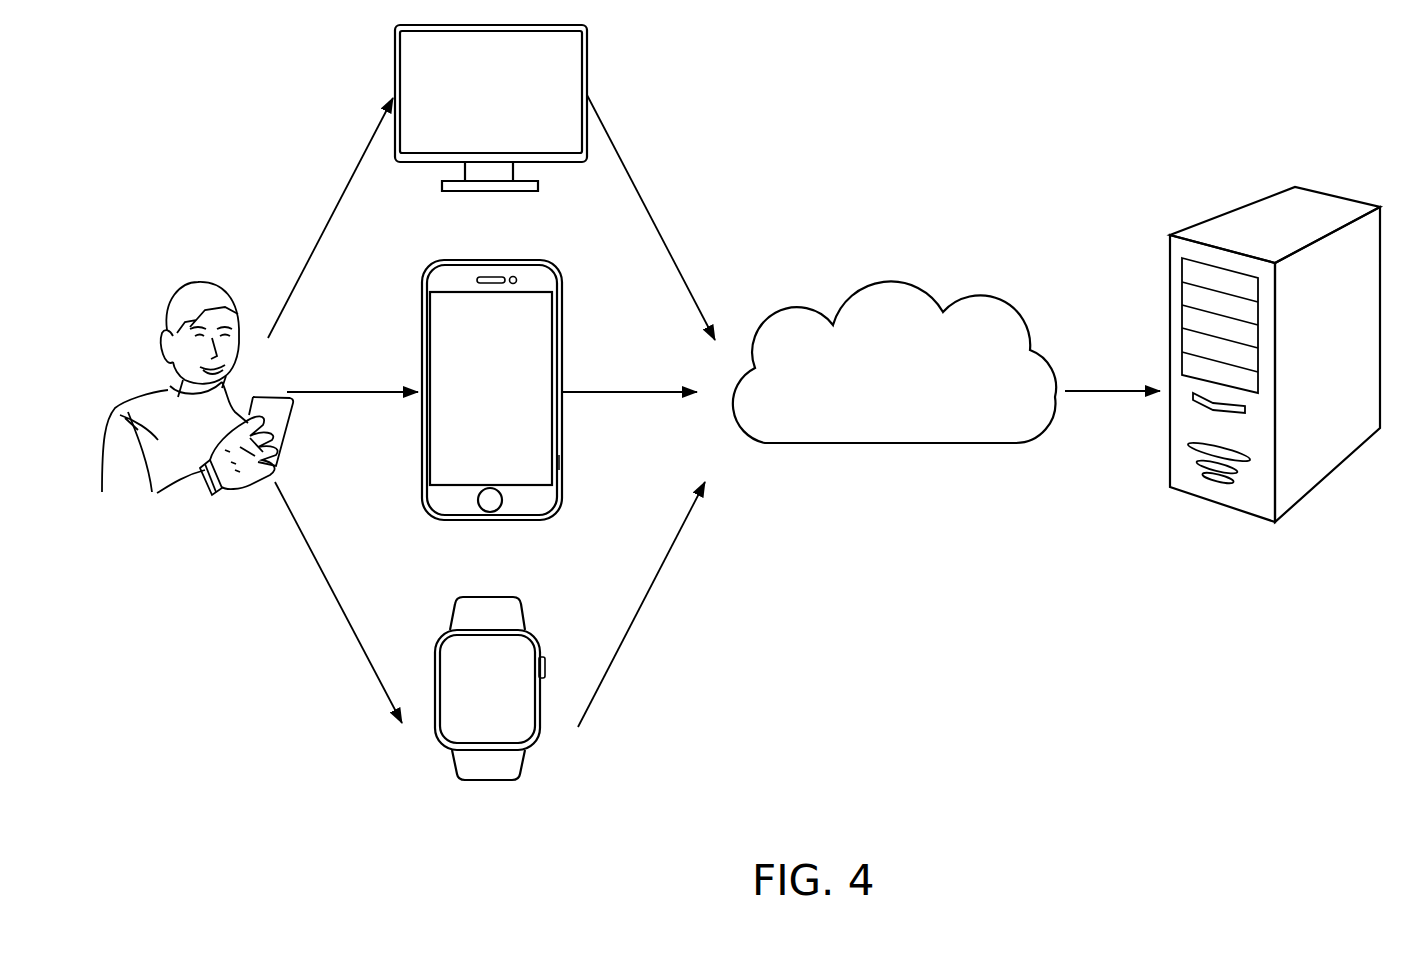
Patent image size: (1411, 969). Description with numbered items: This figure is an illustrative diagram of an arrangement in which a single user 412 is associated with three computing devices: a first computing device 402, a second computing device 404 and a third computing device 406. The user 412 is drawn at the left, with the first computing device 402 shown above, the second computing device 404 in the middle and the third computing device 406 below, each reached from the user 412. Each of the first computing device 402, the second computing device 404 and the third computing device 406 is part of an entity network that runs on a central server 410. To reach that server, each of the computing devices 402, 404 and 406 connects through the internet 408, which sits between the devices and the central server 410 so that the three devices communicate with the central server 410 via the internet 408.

The first computing device 402 is at (397, 66).
The second computing device 404 is at (422, 340).
The third computing device 406 is at (447, 630).
The internet 408 is at (880, 443).
The central server 410 is at (1170, 285).
The user 412 is at (170, 378).